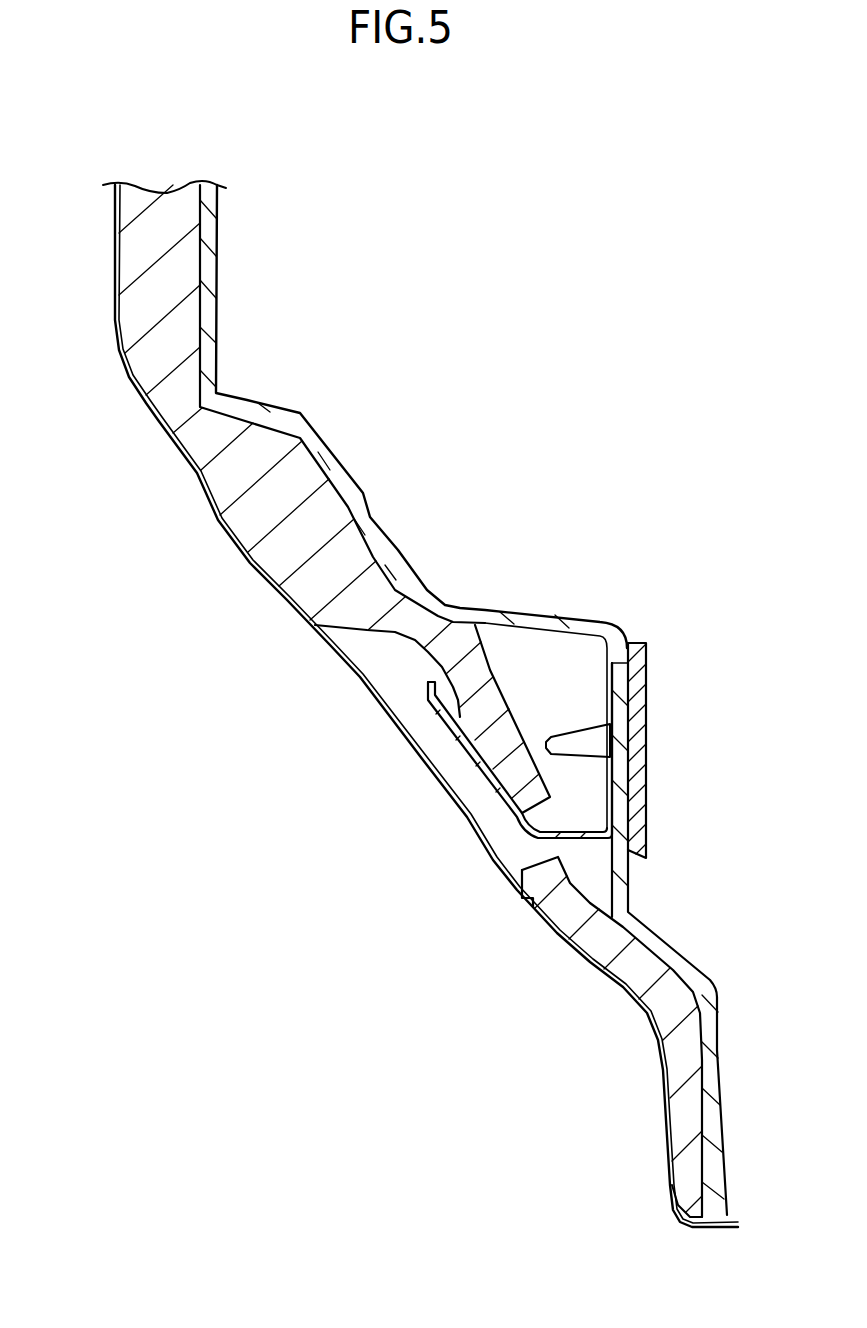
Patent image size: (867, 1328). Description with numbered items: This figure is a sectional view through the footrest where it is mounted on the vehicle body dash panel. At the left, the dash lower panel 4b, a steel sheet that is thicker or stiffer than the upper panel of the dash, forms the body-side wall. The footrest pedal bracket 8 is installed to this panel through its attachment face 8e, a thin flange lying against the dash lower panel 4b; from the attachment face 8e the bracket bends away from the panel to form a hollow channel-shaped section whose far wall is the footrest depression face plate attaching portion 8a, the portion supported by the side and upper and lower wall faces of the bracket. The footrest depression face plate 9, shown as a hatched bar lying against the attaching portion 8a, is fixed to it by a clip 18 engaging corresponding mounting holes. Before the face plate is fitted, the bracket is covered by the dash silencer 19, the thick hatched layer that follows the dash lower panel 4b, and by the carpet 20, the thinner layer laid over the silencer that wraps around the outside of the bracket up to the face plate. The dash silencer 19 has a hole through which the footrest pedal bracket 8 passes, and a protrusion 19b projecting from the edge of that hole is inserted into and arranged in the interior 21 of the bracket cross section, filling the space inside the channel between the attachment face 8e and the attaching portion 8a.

The dash lower panel 4b is at (483, 853).
The dash silencer 19 is at (385, 592).
The protrusion 19b is at (477, 683).
The carpet 20 is at (487, 617).
The attachment face 8e is at (460, 745).
The footrest pedal bracket 8 is at (585, 845).
The footrest depression face plate attaching portion 8a is at (613, 777).
The footrest depression face plate 9 is at (640, 686).
The clip 18 is at (585, 750).
The interior in cross section of the footrest pedal bracket 21 is at (572, 718).